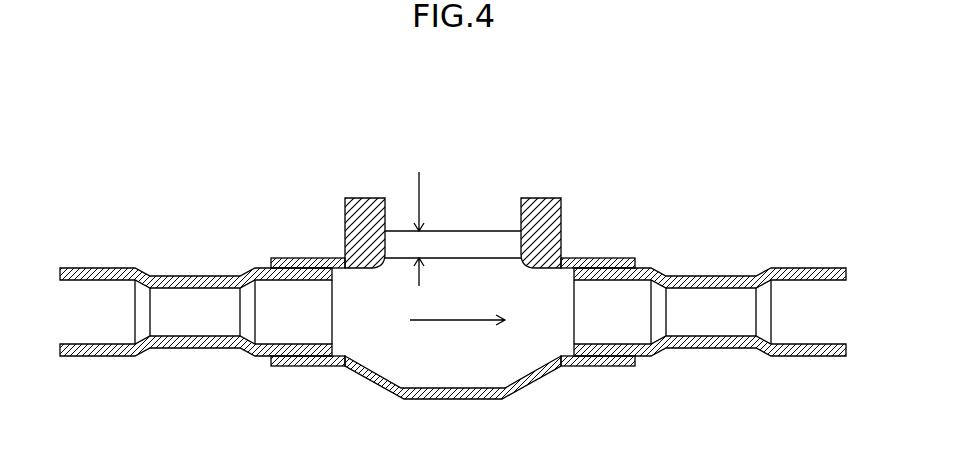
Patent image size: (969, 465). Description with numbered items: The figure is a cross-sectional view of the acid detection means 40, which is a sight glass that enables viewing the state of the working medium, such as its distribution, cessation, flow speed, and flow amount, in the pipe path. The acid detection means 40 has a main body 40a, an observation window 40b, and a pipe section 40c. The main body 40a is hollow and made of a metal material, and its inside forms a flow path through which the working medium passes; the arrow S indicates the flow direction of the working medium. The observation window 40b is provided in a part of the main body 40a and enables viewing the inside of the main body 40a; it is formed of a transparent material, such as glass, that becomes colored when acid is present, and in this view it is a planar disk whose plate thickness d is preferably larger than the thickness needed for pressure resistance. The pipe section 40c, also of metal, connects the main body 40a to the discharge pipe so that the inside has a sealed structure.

The acid detection means 40 is at (548, 138).
The main body 40a is at (593, 257).
The observation window 40b is at (448, 240).
The pipe section 40c is at (203, 285).